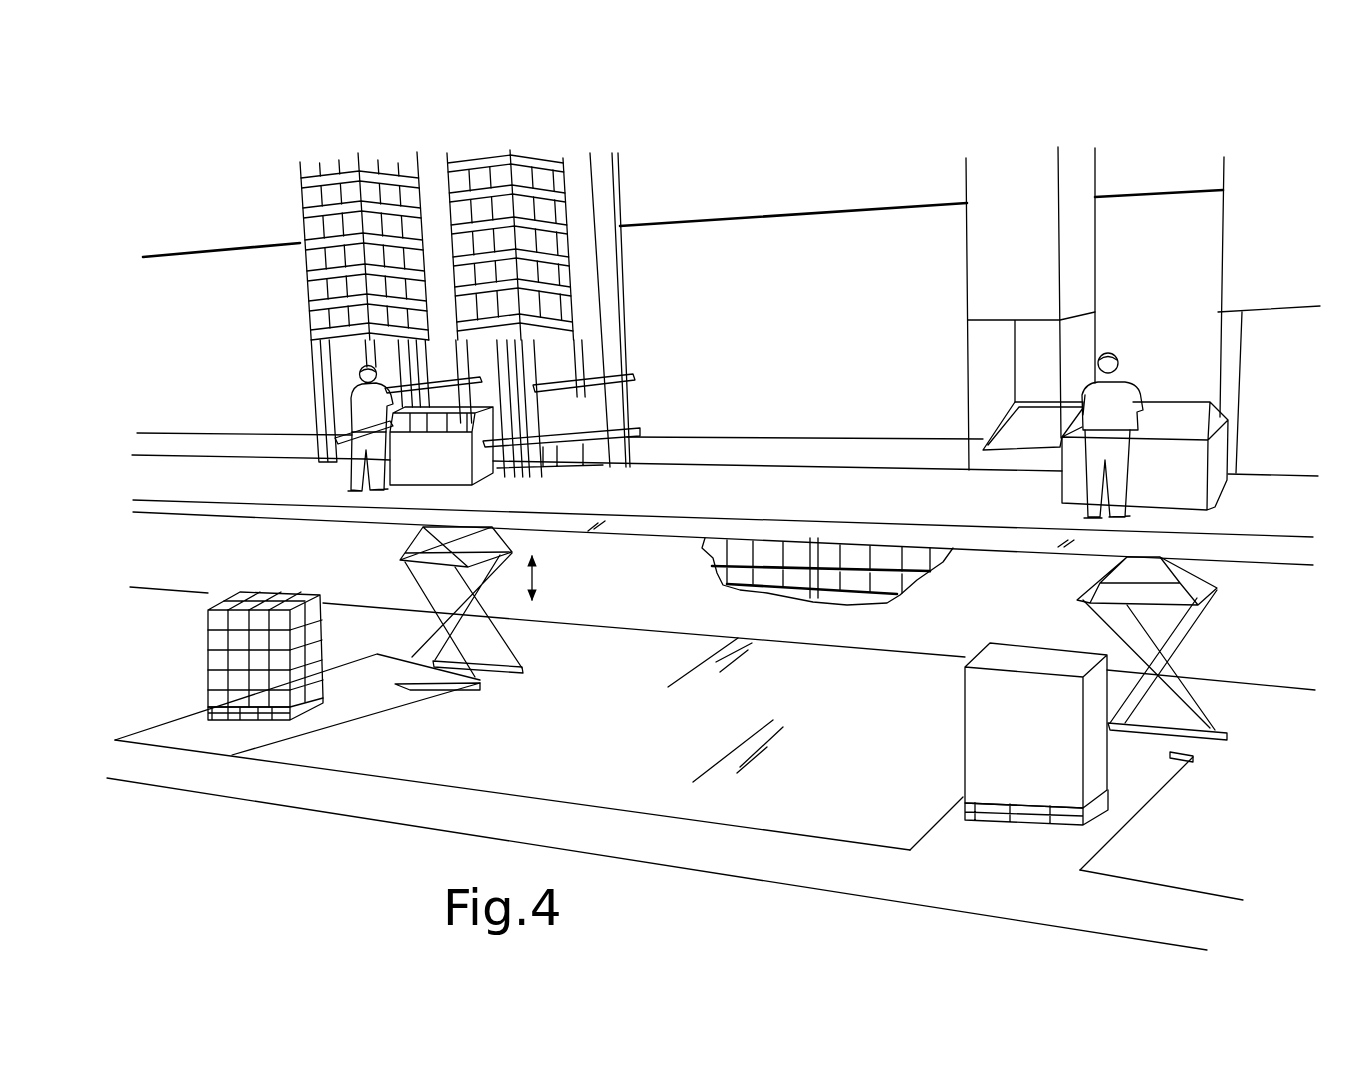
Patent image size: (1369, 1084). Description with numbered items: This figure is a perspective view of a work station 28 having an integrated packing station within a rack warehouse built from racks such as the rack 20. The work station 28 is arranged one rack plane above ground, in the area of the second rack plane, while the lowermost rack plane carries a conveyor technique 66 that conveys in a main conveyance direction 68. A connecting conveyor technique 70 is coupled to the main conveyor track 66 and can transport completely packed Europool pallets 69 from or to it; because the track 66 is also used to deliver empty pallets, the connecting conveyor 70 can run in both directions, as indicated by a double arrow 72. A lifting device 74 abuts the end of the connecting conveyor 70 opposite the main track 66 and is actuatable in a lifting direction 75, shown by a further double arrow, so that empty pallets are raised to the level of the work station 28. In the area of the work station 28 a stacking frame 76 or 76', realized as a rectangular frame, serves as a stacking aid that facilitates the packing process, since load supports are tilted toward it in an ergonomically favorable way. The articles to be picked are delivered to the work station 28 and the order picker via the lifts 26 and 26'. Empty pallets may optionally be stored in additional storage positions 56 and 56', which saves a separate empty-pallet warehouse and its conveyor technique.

The rack 20 is at (814, 357).
The lift 26 is at (532, 206).
The lift 26' is at (594, 408).
The work station 28 is at (332, 479).
The additional storage position 56 is at (344, 307).
The additional storage position 56' is at (981, 350).
The conveyor technique 66 is at (548, 808).
The main conveyance direction 68 is at (367, 798).
The Europool pallet 69 is at (320, 630).
The connecting conveyor technique 70 is at (393, 690).
The double arrow 72 is at (932, 750).
The lifting device 74 is at (505, 643).
The lifting direction 75 is at (536, 574).
The stacking frame 76 is at (414, 490).
The stacking frame 76' is at (1199, 462).